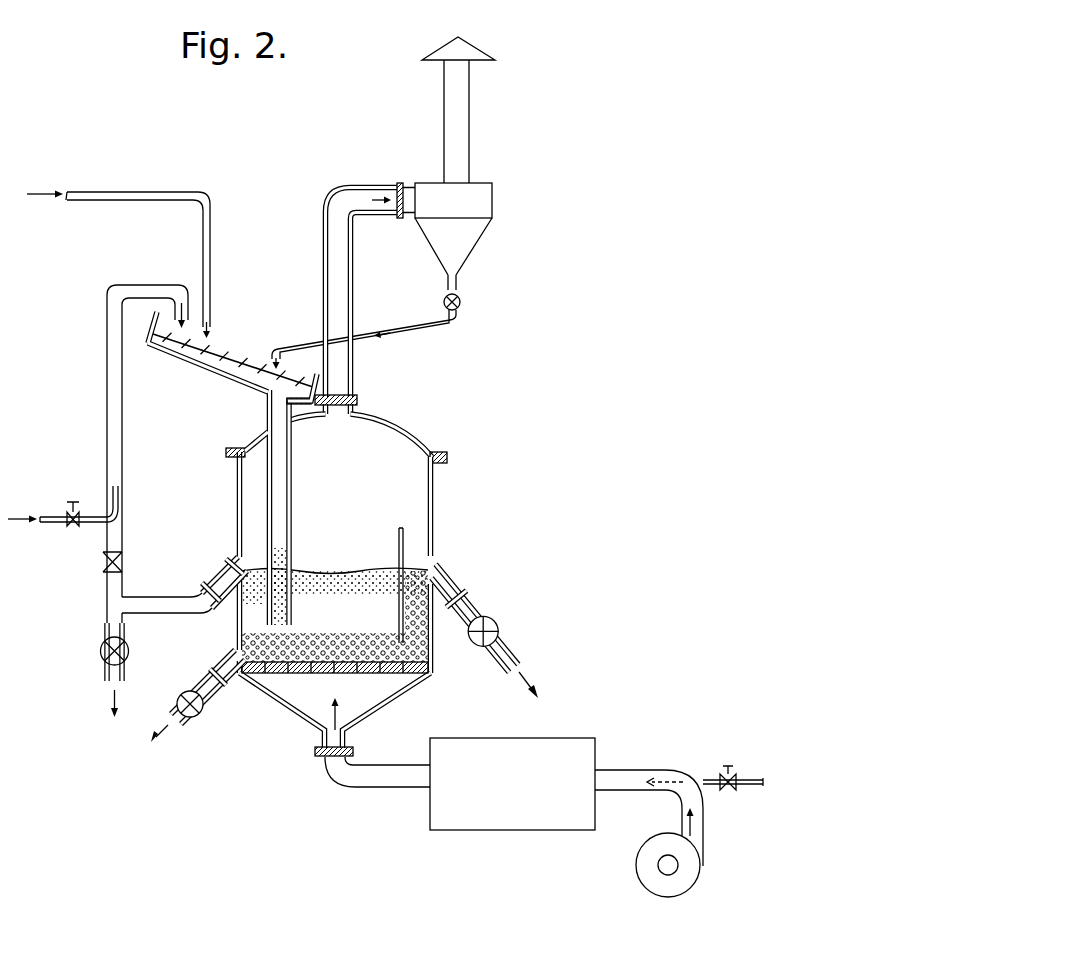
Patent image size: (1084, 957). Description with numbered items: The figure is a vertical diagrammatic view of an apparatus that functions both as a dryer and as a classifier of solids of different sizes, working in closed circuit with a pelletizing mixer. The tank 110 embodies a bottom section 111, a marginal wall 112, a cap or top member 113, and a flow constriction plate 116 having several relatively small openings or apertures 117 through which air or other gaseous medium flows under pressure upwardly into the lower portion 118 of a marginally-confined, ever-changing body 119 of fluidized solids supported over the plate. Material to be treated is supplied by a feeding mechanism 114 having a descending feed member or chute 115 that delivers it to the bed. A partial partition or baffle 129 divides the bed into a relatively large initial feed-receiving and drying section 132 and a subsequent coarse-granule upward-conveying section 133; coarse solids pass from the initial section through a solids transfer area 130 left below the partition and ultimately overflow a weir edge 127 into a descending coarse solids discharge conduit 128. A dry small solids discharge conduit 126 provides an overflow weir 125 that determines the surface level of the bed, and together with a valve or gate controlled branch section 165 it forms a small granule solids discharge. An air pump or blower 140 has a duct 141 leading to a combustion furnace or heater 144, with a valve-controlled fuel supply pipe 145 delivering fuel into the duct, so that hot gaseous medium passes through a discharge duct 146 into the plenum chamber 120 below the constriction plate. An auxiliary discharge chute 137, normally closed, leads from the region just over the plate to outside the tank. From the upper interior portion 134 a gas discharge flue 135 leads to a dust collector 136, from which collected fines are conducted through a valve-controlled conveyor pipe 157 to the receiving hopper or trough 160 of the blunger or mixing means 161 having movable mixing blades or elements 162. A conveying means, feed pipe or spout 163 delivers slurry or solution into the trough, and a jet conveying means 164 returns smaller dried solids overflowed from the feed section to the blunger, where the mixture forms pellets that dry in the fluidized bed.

The tank 110 is at (382, 581).
The bottom section 111 is at (392, 700).
The marginal wall 112 is at (437, 514).
The cap or top member 113 is at (420, 428).
The feeding mechanism 114 is at (238, 410).
The descending feed member or chute 115 is at (267, 427).
The flow constriction plate 116 is at (382, 672).
The openings or apertures 117 is at (343, 673).
The lower portion of the fluidized body 118 is at (335, 647).
The ever-changing body of fluidized solids 119 is at (403, 613).
The plenum chamber 120 is at (335, 699).
The overflow weir 125 is at (233, 556).
The dry small solids discharge conduit 126 is at (226, 567).
The weir edge 127 is at (485, 623).
The coarse solids discharge conduit 128 is at (477, 606).
The partial partition or baffle 129 is at (397, 556).
The solids transfer area 130 is at (407, 616).
The initial feed-receiving and drying section 132 is at (338, 615).
The coarse granule upward-conveying section 133 is at (416, 613).
The upper interior portion of the tank 134 is at (360, 490).
The gas discharge flue 135 is at (353, 358).
The dust collector 136 is at (475, 248).
The auxiliary discharge chute 137 is at (198, 693).
The air pump or blower 140 is at (692, 852).
The duct 141 is at (637, 793).
The combustion furnace or heater 144 is at (513, 831).
The valve-controlled fuel supply pipe 145 is at (744, 775).
The discharge duct 146 is at (357, 789).
The valve-controlled conveyor pipe 157 is at (443, 328).
The receiving hopper or trough 160 is at (230, 363).
The blunger or mixing means 161 is at (210, 367).
The mixing blades or elements 162 is at (256, 355).
The conveying means, feed pipe or spout 163 is at (118, 255).
The jet conveying means 164 is at (107, 416).
The valve or gate controlled branch section 165 is at (104, 645).